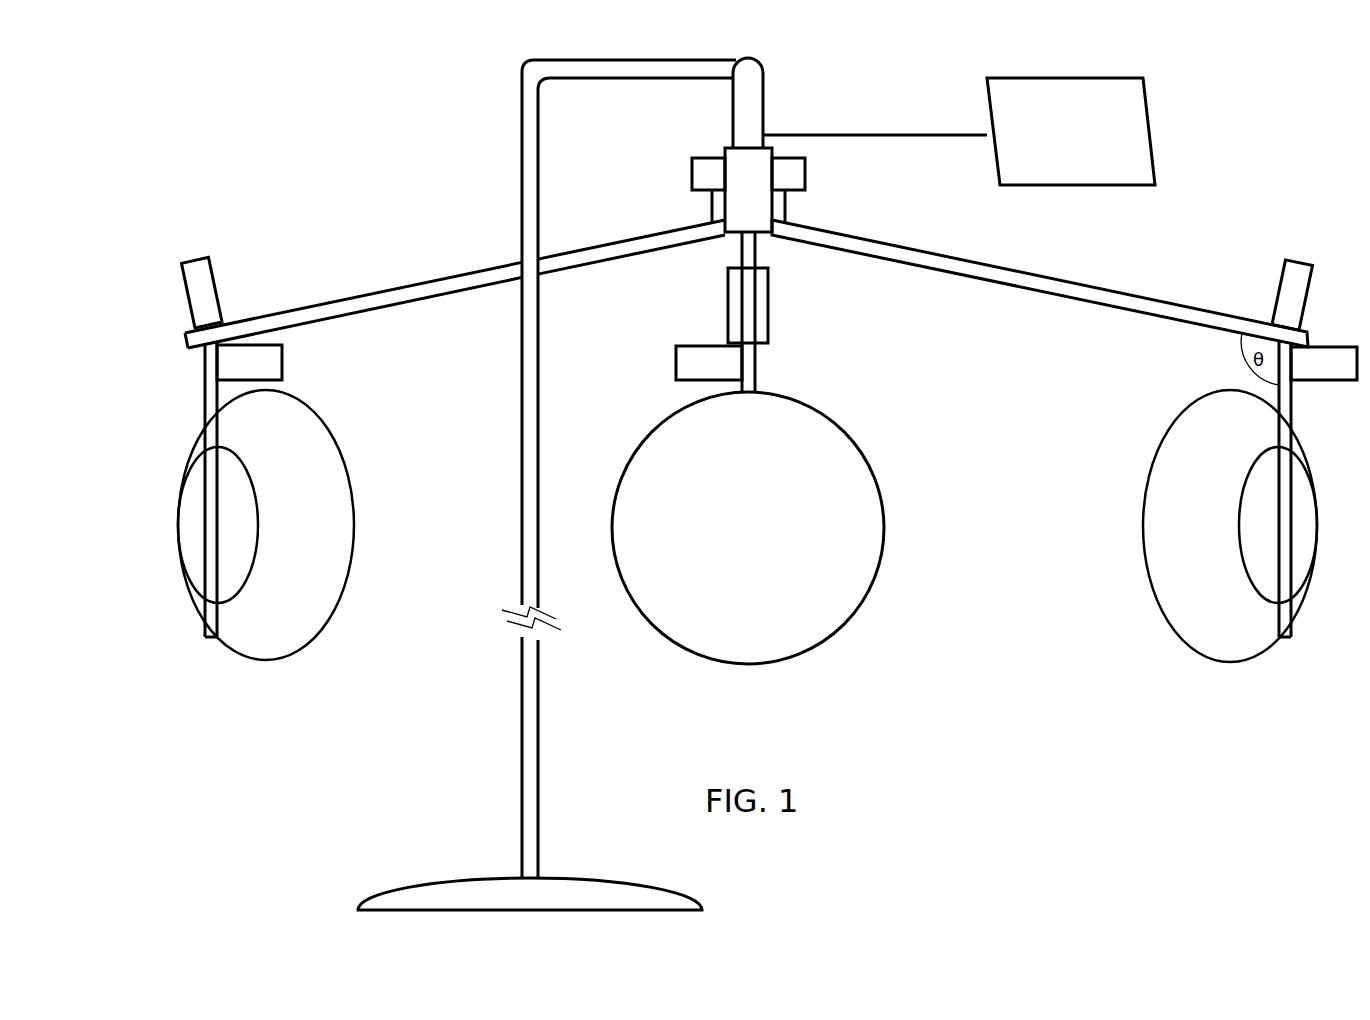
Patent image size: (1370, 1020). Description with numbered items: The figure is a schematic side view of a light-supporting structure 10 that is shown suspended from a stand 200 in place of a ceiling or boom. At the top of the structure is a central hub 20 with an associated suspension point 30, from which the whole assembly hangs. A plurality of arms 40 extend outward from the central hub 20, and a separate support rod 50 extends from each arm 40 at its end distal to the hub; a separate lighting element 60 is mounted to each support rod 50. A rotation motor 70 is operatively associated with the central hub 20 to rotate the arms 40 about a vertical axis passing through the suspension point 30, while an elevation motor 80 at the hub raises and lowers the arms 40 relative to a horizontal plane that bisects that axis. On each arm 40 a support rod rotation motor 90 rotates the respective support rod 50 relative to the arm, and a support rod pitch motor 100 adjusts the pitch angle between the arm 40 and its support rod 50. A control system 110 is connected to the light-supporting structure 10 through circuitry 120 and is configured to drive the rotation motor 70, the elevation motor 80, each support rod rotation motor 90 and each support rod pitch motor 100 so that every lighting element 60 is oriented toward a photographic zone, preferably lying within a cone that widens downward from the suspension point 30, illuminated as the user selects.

The light-supporting structure 10 is at (432, 262).
The central hub 20 is at (745, 185).
The suspension point 30 is at (750, 56).
The arms 40 is at (476, 279).
The support rod 50 is at (215, 616).
The lighting element 60 is at (325, 540).
The rotation motor 70 is at (750, 100).
The elevation motor 80 is at (788, 172).
The support rod rotation motor 90 is at (200, 280).
The support rod pitch motor 100 is at (258, 360).
The control system 110 is at (1150, 112).
The circuitry 120 is at (918, 134).
The stand 200 is at (530, 130).